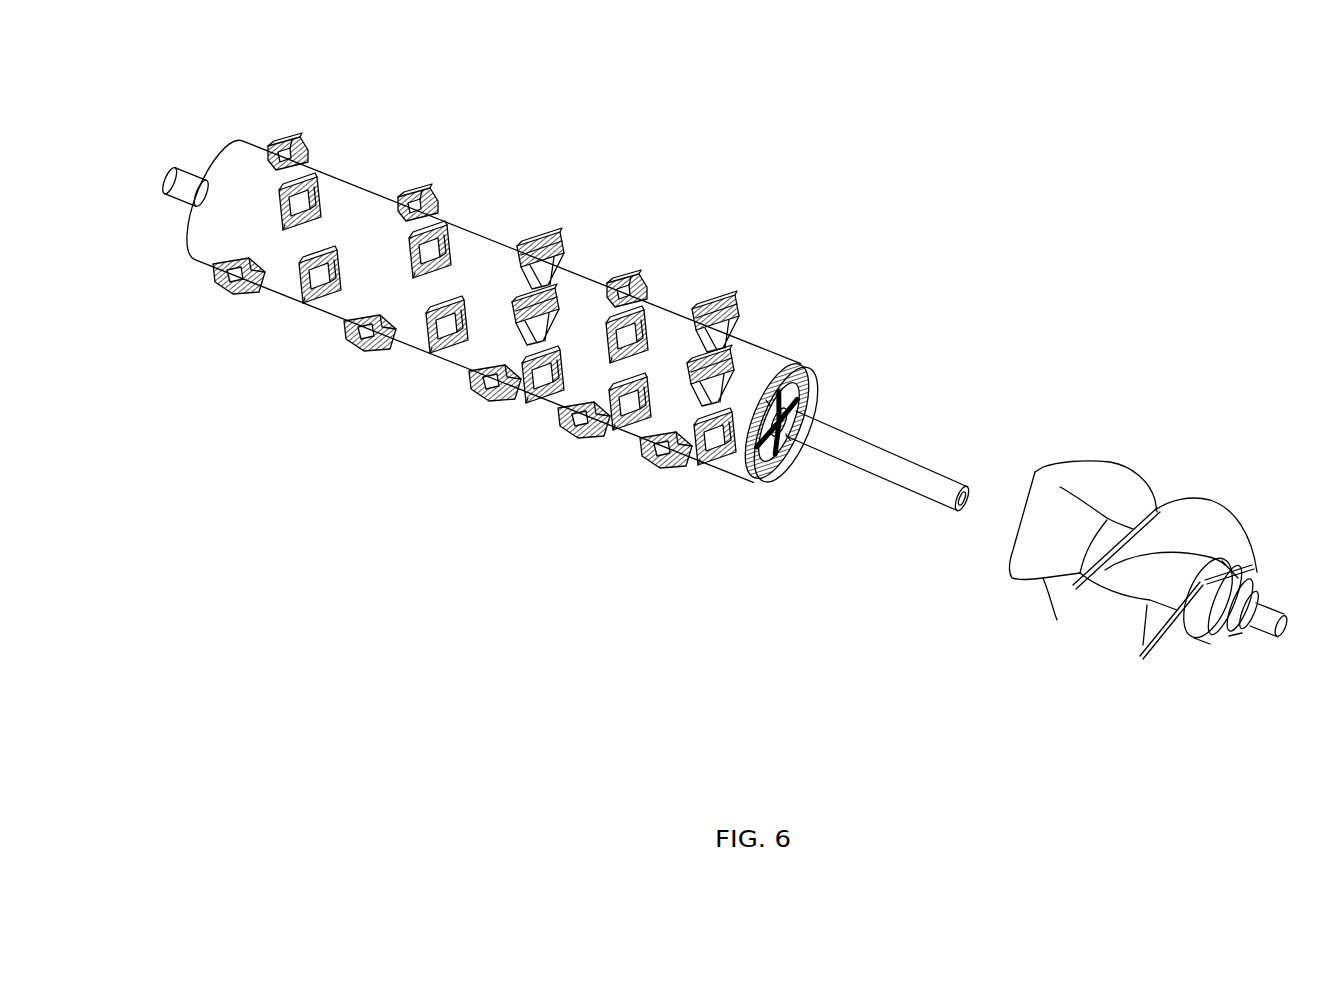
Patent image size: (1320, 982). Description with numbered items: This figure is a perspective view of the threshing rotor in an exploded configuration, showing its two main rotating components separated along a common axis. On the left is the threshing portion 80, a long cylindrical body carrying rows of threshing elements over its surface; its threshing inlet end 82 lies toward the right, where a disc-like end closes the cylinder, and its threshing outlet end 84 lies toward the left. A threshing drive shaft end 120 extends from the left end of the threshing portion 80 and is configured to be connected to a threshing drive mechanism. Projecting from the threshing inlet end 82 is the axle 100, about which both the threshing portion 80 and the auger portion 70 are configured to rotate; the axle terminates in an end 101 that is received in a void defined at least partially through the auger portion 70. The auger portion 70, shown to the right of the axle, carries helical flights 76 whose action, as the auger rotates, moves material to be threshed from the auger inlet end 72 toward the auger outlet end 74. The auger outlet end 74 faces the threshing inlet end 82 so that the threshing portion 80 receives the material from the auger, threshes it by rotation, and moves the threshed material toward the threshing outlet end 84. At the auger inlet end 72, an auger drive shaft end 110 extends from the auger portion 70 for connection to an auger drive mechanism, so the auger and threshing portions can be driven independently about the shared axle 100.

The auger portion 70 is at (1100, 678).
The auger inlet end 72 is at (1190, 660).
The auger outlet end 74 is at (1087, 643).
The flights 76 is at (1070, 597).
The threshing portion 80 is at (428, 418).
The threshing inlet end 82 is at (740, 500).
The threshing outlet end 84 is at (208, 297).
The axle 100 is at (875, 465).
The end of the axle 101 is at (953, 490).
The auger drive shaft end 110 is at (1262, 640).
The threshing drive shaft end 120 is at (196, 178).